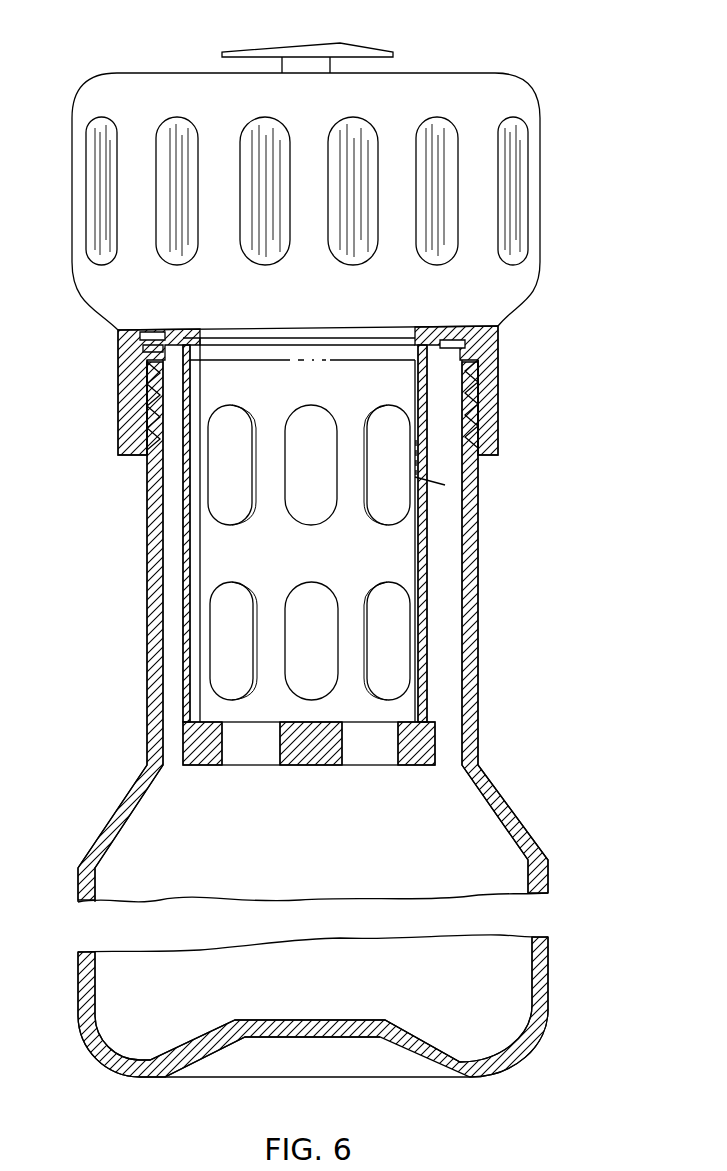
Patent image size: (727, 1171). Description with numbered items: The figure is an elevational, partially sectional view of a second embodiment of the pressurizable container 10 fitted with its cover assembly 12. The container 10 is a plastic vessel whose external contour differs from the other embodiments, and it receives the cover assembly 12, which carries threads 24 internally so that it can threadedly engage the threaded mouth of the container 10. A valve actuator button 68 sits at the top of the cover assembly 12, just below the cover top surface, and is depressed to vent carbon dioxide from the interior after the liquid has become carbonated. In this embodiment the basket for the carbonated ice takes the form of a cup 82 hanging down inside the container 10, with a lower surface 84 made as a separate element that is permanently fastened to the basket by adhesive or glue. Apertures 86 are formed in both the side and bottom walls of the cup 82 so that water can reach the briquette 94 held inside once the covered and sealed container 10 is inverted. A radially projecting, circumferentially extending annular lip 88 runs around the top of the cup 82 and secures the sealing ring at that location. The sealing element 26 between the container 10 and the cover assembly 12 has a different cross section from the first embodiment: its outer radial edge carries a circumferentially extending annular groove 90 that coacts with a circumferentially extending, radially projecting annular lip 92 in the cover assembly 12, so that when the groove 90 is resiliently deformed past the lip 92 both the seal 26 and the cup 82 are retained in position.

The pressurizable container 10 is at (548, 634).
The cover assembly 12 is at (537, 72).
The threads 24 is at (482, 403).
The annular seal 26 is at (190, 358).
The valve actuator button 68 is at (336, 45).
The cup 82 is at (297, 565).
The lower surface 84 is at (327, 765).
The apertures 86 is at (410, 600).
The annular lip 88 is at (457, 338).
The annular groove 90 is at (150, 335).
The annular lip 92 is at (150, 343).
The briquette 94 is at (445, 485).